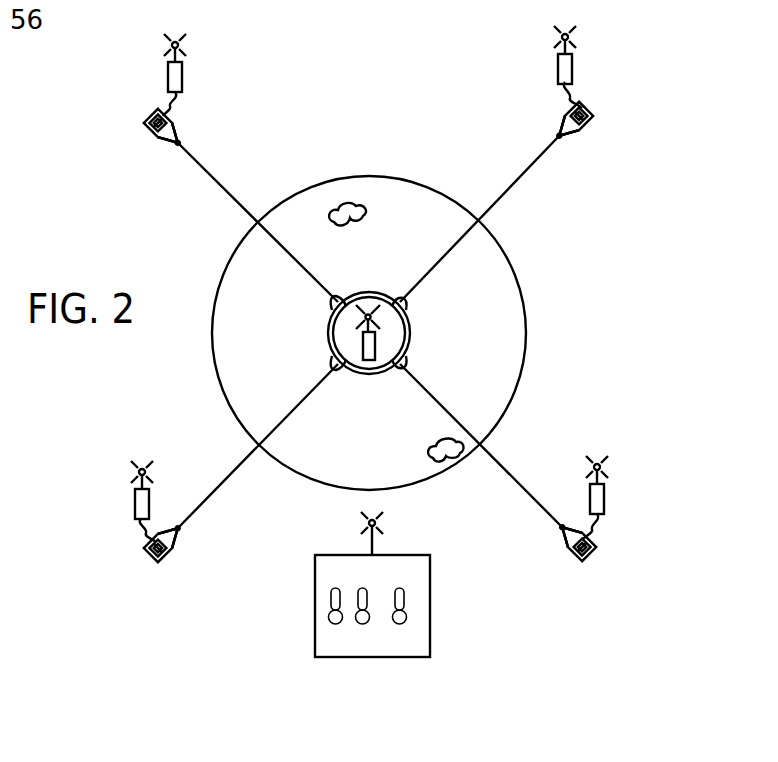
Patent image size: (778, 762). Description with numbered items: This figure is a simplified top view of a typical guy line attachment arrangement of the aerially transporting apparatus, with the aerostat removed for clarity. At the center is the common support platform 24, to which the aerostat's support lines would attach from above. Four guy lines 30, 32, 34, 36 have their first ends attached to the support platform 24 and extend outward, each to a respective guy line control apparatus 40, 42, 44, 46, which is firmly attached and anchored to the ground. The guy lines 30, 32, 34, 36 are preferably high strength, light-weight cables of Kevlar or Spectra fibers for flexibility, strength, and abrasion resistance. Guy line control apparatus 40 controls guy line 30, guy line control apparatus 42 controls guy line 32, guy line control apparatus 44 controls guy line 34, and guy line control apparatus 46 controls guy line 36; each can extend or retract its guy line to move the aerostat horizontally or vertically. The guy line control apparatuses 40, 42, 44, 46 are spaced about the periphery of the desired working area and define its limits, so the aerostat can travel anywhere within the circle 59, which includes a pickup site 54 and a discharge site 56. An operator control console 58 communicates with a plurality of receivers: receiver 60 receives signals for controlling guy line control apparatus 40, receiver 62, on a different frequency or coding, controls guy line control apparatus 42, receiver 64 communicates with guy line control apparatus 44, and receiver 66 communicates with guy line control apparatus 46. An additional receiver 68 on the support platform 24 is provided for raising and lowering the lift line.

The support platform 24 is at (407, 301).
The guy line 30 is at (525, 487).
The guy line 32 is at (520, 180).
The guy line 34 is at (220, 483).
The guy line 36 is at (226, 183).
The guy line control apparatus 40 is at (590, 558).
The guy line control apparatus 42 is at (592, 108).
The guy line control apparatus 44 is at (145, 553).
The guy line control apparatus 46 is at (148, 118).
The pickup site 54 is at (363, 208).
The discharge site 56 is at (458, 452).
The operator control console 58 is at (432, 570).
The circle 59 is at (527, 337).
The receiver 60 is at (603, 505).
The receiver 62 is at (573, 68).
The receiver 64 is at (135, 500).
The receiver 66 is at (185, 74).
The additional receiver 68 is at (377, 342).